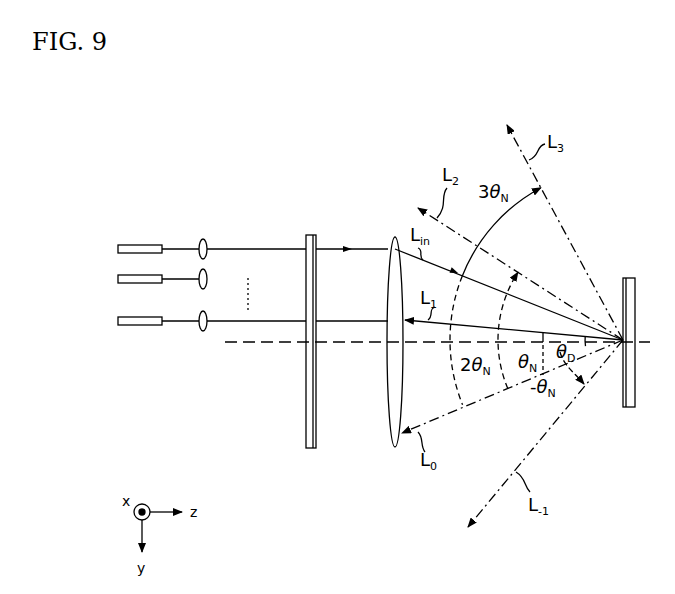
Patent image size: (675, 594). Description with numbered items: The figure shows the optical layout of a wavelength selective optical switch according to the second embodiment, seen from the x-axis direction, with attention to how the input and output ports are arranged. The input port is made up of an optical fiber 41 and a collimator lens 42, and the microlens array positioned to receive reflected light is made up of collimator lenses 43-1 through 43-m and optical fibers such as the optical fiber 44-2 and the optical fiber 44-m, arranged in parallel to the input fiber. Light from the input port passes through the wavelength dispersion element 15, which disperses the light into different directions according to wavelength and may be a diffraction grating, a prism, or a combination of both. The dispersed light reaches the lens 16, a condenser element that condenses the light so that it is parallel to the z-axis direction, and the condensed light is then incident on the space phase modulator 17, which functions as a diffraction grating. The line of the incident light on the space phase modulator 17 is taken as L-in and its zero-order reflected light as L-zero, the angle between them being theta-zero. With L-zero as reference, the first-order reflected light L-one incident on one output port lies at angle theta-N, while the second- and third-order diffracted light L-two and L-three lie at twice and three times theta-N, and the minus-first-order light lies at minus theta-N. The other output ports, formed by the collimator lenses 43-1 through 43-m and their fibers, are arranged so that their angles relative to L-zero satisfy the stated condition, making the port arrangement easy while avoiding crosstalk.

The optical fiber 41 is at (128, 243).
The optical fiber 44-2 is at (128, 275).
The optical fiber 44-m is at (130, 327).
The collimator lens 42 is at (199, 240).
The collimator lens 43-1 is at (208, 279).
The collimator lens 43-m is at (200, 327).
The wavelength dispersion element 15 is at (317, 237).
The lens 16 is at (385, 238).
The space phase modulator 17 is at (622, 281).